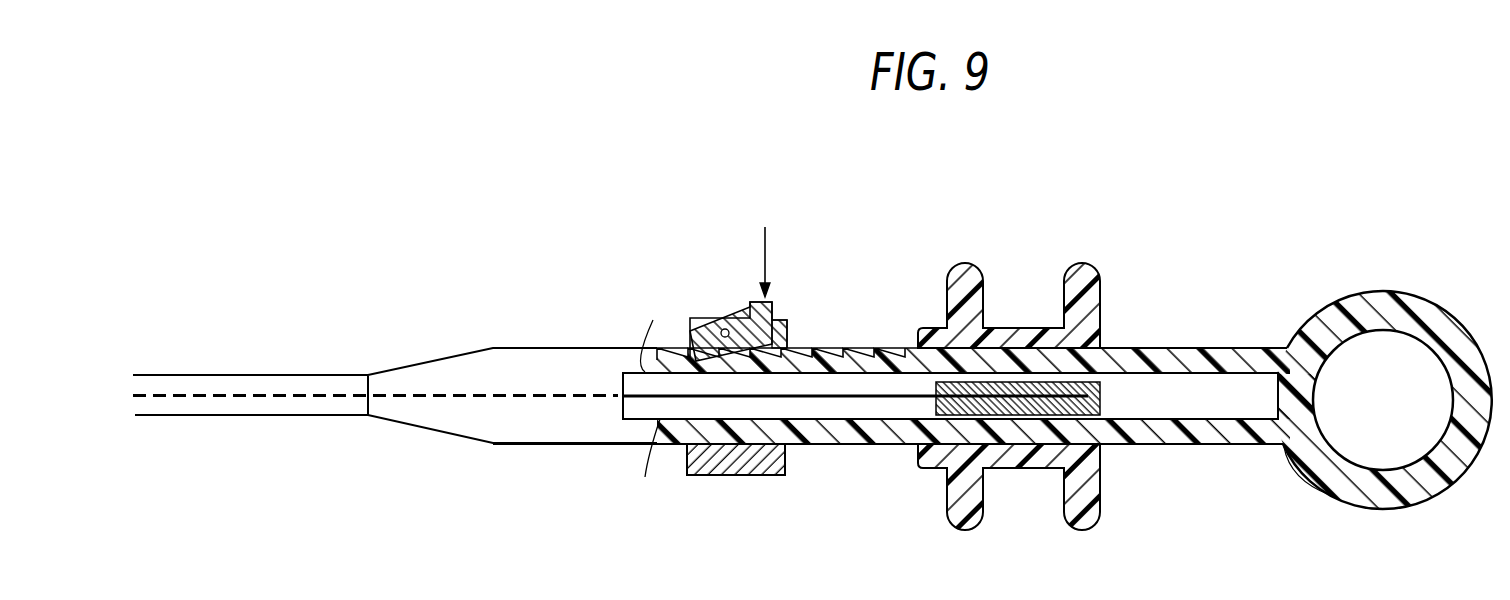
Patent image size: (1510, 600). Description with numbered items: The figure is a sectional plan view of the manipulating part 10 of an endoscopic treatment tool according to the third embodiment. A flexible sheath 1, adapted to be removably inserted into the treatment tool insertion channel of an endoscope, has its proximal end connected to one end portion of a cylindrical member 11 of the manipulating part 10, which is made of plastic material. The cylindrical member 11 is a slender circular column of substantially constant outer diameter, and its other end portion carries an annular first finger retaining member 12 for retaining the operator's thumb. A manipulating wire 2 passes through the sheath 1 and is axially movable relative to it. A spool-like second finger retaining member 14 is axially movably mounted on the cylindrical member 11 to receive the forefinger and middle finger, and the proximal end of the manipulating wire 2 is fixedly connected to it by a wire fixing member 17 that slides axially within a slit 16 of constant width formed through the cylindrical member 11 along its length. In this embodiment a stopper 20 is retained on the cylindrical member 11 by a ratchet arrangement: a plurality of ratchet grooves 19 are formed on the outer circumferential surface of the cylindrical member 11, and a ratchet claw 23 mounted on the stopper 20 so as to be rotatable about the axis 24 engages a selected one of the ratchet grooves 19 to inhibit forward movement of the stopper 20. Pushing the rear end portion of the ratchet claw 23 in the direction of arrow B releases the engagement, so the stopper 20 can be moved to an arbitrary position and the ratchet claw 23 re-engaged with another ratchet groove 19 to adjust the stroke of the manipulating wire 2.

The flexible sheath 1 is at (263, 375).
The manipulating wire 2 is at (950, 476).
The manipulating part 10 is at (992, 381).
The cylindrical member 11 is at (1203, 445).
The first finger retaining member 12 is at (1380, 300).
The second finger retaining member 14 is at (1030, 328).
The slit 16 is at (1160, 365).
The wire fixing member 17 is at (1108, 421).
The ratchet grooves 19 is at (833, 350).
The stopper 20 is at (720, 476).
The ratchet claw 23 is at (713, 282).
The axis 24 is at (722, 329).
The arrow B direction B is at (765, 240).